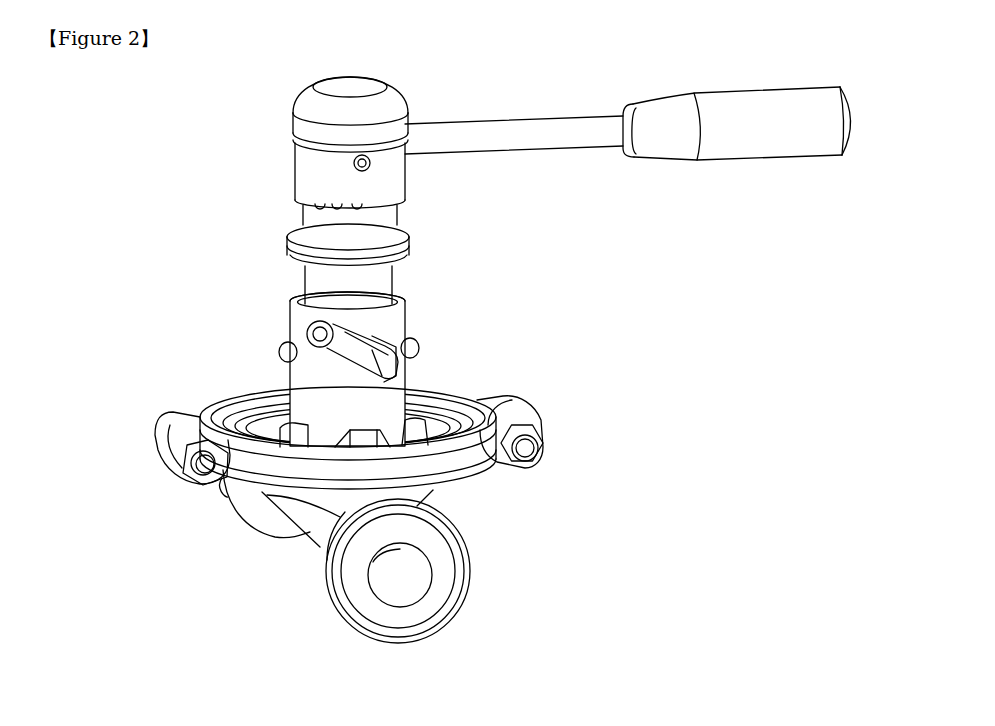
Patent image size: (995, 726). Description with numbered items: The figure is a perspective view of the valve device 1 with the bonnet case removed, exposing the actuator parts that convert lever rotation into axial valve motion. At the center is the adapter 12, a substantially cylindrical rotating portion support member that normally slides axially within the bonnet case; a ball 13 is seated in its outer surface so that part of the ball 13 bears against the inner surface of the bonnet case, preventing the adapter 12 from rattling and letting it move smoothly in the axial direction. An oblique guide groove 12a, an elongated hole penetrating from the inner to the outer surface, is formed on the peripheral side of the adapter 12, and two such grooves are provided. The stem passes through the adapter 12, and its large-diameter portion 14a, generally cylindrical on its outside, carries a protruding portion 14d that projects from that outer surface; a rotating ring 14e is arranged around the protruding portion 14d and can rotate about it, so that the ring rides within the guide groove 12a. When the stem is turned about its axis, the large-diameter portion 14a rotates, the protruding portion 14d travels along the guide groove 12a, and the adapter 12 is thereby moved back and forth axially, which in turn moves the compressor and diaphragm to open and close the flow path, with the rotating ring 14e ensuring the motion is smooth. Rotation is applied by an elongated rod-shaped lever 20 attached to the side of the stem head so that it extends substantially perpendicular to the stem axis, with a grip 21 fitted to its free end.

The valve device 1 is at (252, 135).
The adapter 12 is at (378, 413).
The guide groove 12a is at (370, 343).
The ball 13 is at (280, 358).
The large-diameter portion 14a is at (378, 290).
The protruding portion 14d is at (291, 336).
The rotating ring 14e is at (292, 322).
The lever 20 is at (563, 143).
The grip 21 is at (780, 132).